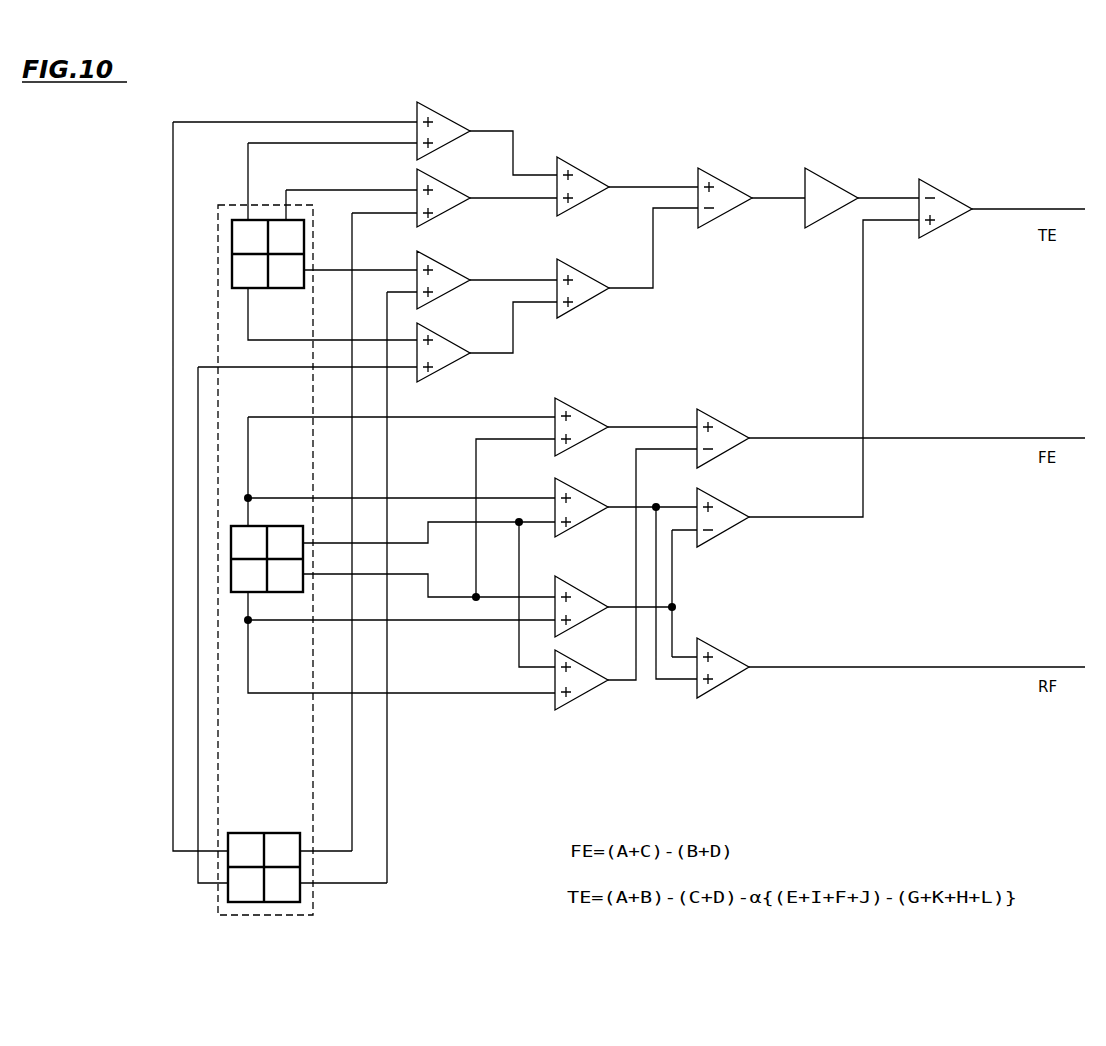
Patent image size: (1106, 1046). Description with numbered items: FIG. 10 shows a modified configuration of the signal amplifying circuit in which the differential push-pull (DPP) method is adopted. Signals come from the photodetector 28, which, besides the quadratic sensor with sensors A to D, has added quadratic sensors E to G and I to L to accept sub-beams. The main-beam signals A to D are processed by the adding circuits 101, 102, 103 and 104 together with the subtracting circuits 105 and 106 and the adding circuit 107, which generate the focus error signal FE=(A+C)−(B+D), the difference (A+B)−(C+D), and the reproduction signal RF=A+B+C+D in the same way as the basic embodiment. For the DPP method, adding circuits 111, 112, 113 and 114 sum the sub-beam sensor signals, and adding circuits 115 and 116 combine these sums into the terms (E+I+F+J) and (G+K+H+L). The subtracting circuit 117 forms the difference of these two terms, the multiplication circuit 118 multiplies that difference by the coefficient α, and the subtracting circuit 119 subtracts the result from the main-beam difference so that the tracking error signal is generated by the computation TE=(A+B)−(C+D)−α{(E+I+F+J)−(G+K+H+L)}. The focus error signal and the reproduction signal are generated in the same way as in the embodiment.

The photodetector 28 is at (218, 330).
The adding circuit 101 is at (588, 416).
The adding circuit 102 is at (588, 496).
The adding circuit 103 is at (588, 594).
The adding circuit 104 is at (588, 668).
The subtracting circuit 105 is at (730, 427).
The subtracting circuit 106 is at (730, 506).
The adding circuit 107 is at (730, 656).
The adding circuit 111 is at (450, 120).
The adding circuit 112 is at (450, 187).
The adding circuit 113 is at (450, 269).
The adding circuit 114 is at (450, 341).
The adding circuit 115 is at (590, 176).
The adding circuit 116 is at (590, 278).
The subtracting circuit 117 is at (731, 186).
The multiplication circuit 118 is at (838, 186).
The subtracting circuit 119 is at (952, 197).